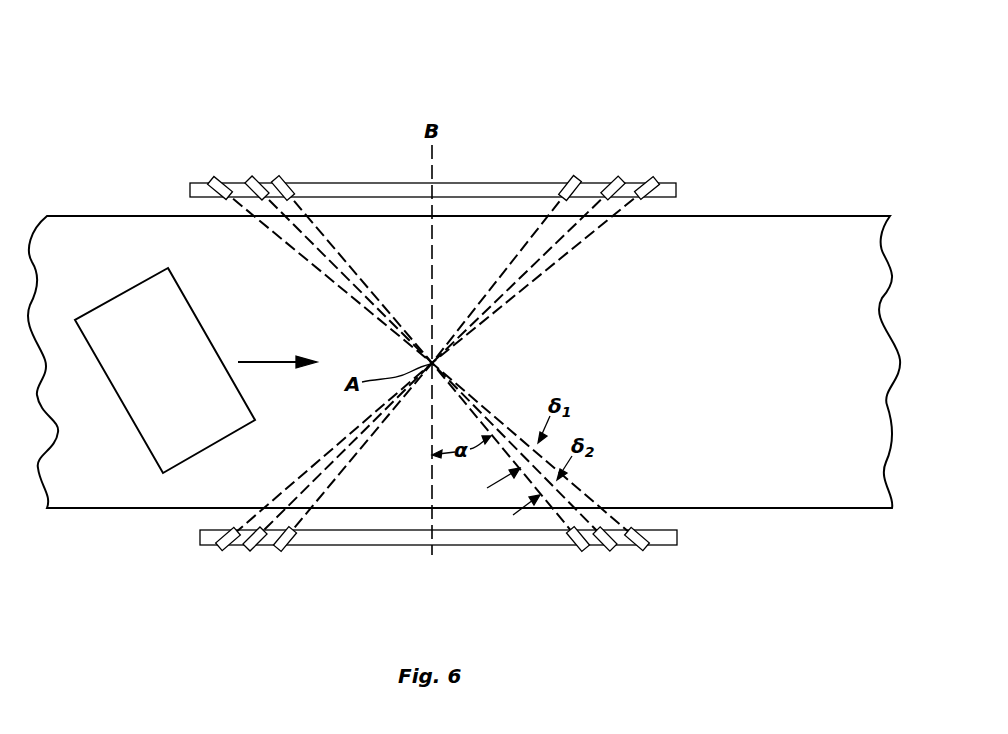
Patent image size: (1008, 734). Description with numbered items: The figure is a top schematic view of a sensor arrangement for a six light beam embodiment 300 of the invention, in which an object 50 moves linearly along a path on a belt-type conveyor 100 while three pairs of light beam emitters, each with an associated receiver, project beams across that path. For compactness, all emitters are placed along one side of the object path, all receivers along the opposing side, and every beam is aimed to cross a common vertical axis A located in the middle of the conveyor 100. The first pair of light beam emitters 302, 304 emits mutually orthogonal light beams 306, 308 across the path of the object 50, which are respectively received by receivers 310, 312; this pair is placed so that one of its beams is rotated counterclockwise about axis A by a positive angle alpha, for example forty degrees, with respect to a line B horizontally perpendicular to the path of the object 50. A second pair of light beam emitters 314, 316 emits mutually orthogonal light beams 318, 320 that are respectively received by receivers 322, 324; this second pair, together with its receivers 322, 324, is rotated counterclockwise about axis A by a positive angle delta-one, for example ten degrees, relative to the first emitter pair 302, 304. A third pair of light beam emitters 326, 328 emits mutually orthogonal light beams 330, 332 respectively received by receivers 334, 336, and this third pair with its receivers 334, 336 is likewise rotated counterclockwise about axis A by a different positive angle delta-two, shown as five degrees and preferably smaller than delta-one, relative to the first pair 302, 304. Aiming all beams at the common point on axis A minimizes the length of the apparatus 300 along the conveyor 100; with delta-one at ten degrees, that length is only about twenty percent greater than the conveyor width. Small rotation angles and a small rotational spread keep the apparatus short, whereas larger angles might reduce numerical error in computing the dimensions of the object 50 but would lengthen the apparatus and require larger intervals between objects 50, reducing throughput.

The object 50 is at (178, 374).
The belt-type conveyor 100 is at (845, 230).
The embodiment 300 is at (777, 128).
The light beam emitter 302 is at (272, 177).
The light beam emitter 304 is at (652, 173).
The light beam 306 is at (332, 251).
The light beam 308 is at (570, 250).
The receiver 310 is at (575, 547).
The receiver 312 is at (215, 553).
The light beam emitter 314 is at (212, 176).
The light beam emitter 316 is at (568, 176).
The light beam 318 is at (597, 500).
The light beam 320 is at (322, 498).
The receiver 322 is at (637, 547).
The receiver 324 is at (287, 553).
The light beam emitter 326 is at (246, 177).
The light beam emitter 328 is at (618, 176).
The light beam 330 is at (360, 298).
The light beam 332 is at (512, 295).
The receiver 334 is at (603, 548).
The receiver 336 is at (247, 552).